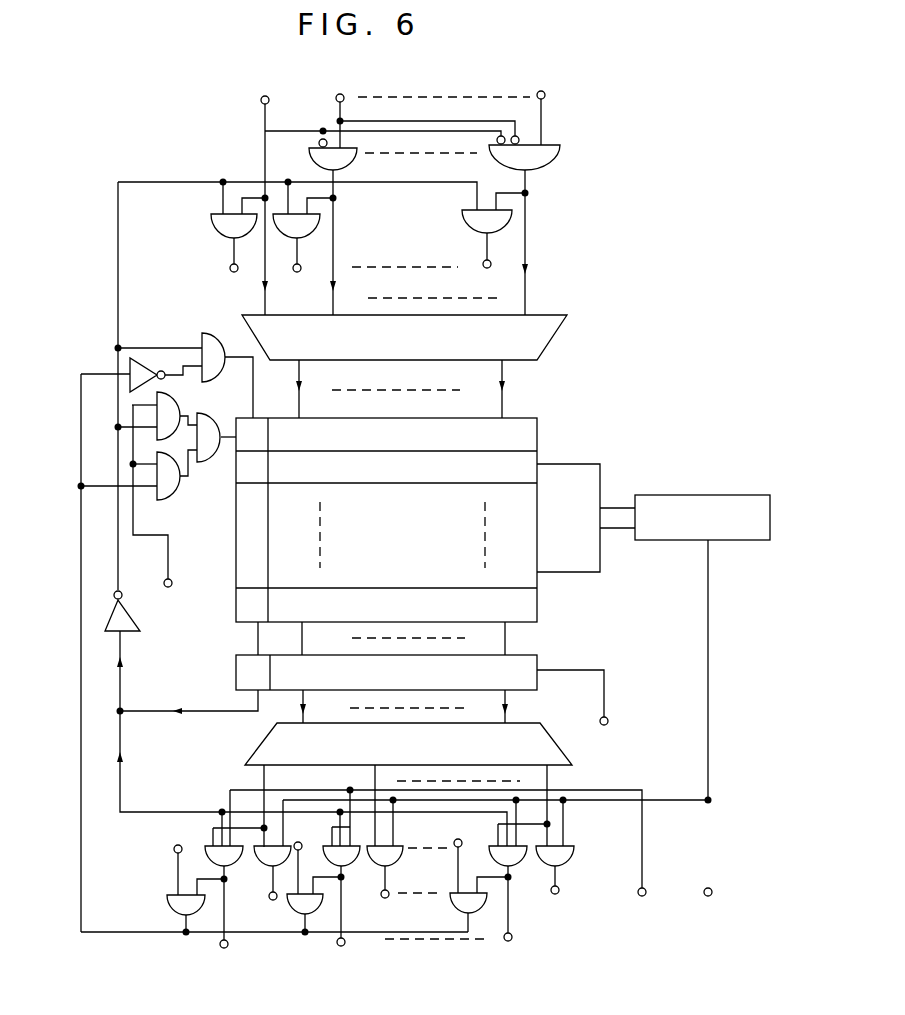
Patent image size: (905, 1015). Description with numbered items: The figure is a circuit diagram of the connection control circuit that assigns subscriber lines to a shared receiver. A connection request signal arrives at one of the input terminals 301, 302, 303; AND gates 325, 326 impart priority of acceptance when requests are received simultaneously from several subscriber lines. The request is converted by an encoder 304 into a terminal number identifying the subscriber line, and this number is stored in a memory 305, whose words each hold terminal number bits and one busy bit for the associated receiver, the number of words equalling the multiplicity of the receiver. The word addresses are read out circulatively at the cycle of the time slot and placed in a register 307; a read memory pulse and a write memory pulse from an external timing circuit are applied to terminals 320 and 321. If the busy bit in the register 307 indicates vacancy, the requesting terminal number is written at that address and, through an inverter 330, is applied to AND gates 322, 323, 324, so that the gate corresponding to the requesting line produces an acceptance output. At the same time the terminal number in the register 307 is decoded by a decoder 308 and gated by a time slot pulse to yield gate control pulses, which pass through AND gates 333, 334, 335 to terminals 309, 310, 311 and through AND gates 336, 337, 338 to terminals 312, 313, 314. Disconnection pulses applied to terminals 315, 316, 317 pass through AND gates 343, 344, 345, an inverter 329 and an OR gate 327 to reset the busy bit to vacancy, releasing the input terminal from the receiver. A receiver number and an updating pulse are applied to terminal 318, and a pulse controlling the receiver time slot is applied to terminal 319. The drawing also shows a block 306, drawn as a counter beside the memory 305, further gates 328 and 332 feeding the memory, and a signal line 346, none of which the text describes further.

The input terminal 301 is at (268, 96).
The input terminal 302 is at (343, 94).
The input terminal 303 is at (558, 78).
The encoder 304 is at (540, 318).
The memory 305 is at (537, 430).
The counter 306 is at (718, 495).
The register 307 is at (545, 655).
The decoder 308 is at (565, 745).
The terminal 309 is at (269, 898).
The terminal 310 is at (386, 898).
The terminal 311 is at (556, 894).
The terminal 312 is at (222, 948).
The terminal 313 is at (344, 945).
The terminal 314 is at (512, 938).
The terminal 315 is at (174, 849).
The terminal 316 is at (312, 838).
The terminal 317 is at (460, 839).
The terminal 318 is at (711, 888).
The terminal 319 is at (645, 889).
The terminal 320 is at (608, 718).
The terminal 321 is at (170, 587).
The AND gate 322 is at (230, 270).
The AND gate 323 is at (301, 266).
The AND gate 324 is at (508, 225).
The AND gate 325 is at (352, 160).
The AND gate 326 is at (545, 165).
The OR gate 327 is at (222, 338).
The AND gate 328 is at (220, 420).
The inverter 329 is at (142, 360).
The inverter 330 is at (130, 615).
The AND gate 332 is at (178, 492).
The AND gate 333 is at (282, 866).
The AND gate 334 is at (400, 862).
The AND gate 335 is at (572, 860).
The AND gate 336 is at (240, 860).
The AND gate 337 is at (349, 864).
The AND gate 338 is at (525, 860).
The AND gate 343 is at (167, 900).
The AND gate 344 is at (318, 910).
The AND gate 345 is at (483, 905).
The signal line 346 is at (132, 405).